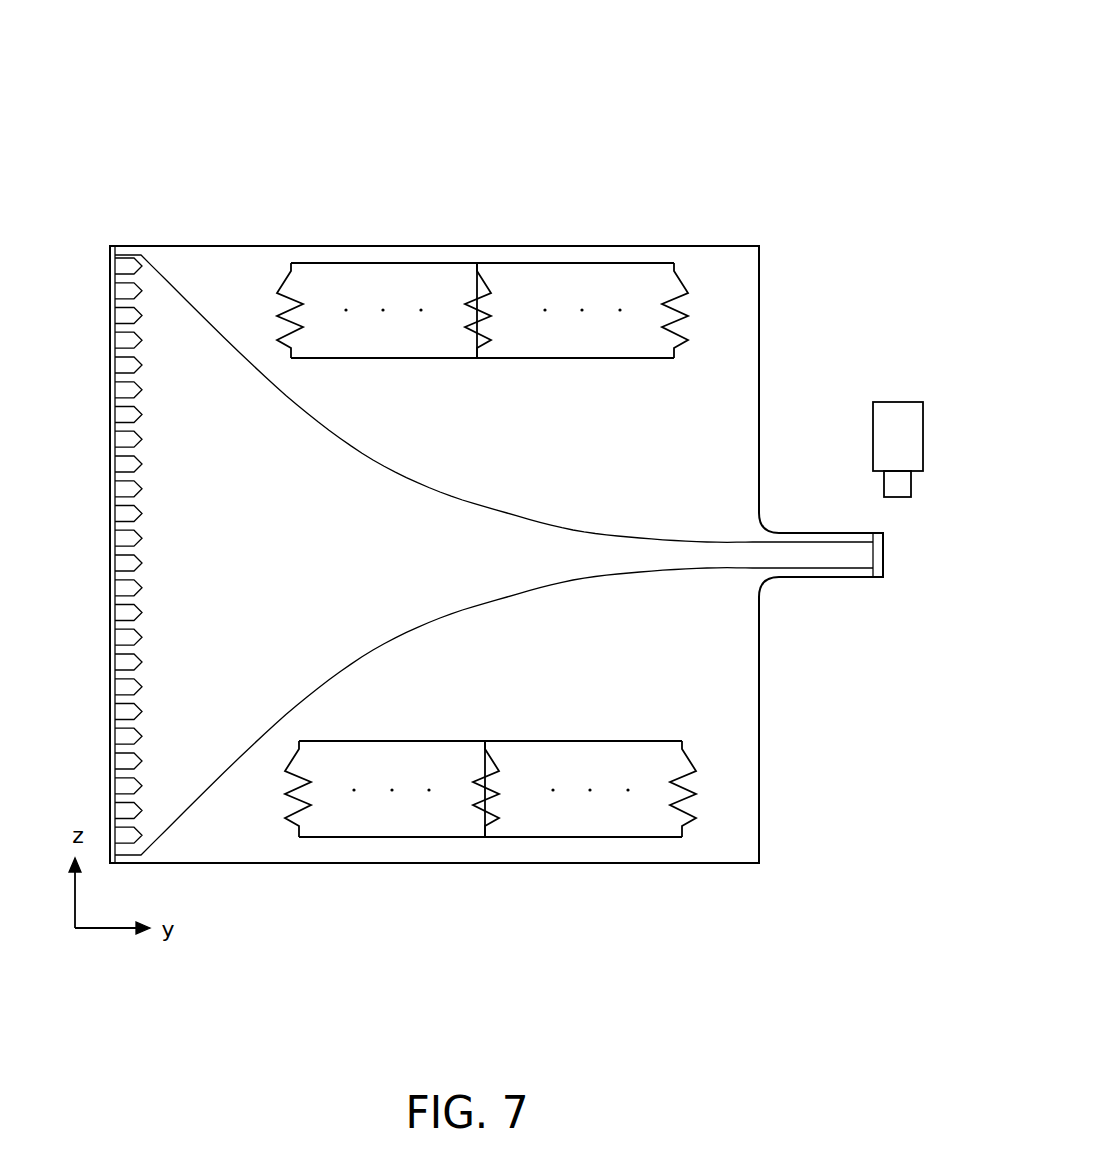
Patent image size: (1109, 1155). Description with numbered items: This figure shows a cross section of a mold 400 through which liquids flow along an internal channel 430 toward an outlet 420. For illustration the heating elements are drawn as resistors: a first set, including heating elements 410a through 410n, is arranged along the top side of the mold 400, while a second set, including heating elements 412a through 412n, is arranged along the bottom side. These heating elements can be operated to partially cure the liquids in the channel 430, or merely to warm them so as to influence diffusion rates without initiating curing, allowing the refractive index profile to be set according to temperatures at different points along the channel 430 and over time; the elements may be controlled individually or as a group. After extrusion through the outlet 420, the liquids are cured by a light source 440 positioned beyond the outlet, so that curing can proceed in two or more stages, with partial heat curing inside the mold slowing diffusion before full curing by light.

The mold 400 is at (492, 116).
The heating element 410a is at (343, 173).
The heating element 410n is at (698, 182).
The heating element 412a is at (278, 915).
The heating element 412n is at (632, 920).
The outlet 420 is at (883, 552).
The channel 430 is at (275, 556).
The light source 440 is at (937, 307).